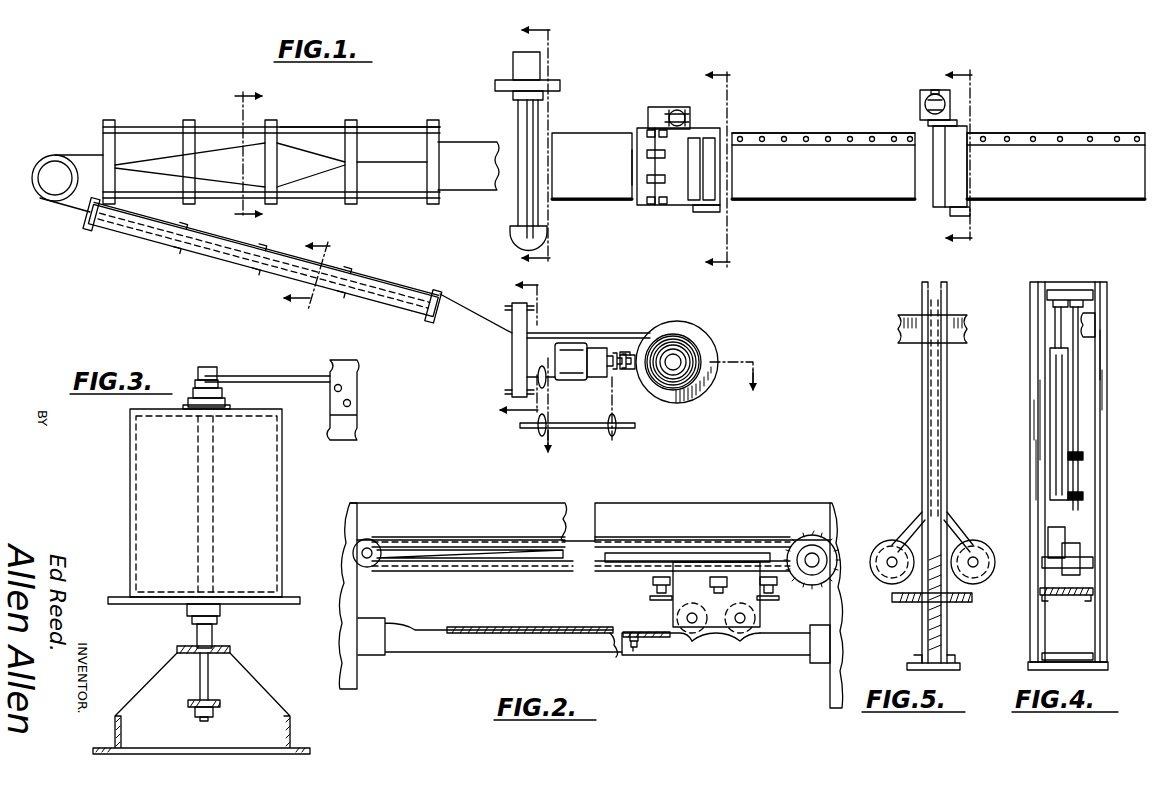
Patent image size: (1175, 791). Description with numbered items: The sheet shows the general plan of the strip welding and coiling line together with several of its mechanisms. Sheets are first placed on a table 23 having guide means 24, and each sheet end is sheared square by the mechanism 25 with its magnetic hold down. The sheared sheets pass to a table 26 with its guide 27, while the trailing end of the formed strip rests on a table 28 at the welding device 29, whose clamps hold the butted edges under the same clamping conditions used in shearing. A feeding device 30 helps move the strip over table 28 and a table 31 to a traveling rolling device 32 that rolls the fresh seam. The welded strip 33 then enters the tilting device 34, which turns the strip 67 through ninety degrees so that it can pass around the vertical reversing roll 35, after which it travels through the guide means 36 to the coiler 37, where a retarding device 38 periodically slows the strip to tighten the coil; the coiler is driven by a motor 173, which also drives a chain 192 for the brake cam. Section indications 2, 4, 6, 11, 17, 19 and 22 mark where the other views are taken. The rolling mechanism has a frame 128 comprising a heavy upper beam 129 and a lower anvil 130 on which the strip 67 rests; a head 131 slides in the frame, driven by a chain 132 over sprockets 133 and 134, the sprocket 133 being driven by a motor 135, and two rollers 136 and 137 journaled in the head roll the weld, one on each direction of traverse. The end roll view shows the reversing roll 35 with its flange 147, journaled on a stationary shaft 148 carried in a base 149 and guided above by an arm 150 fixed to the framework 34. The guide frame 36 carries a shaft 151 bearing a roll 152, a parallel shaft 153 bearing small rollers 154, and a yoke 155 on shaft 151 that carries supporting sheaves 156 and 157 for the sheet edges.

In FIG. 1, the section line 2- 2 is at (528, 144).
In FIG. 1, the section line 4- 4 is at (296, 272).
In FIG. 1, the section line 6- 6 is at (709, 167).
In FIG. 1, the section line 11- 11 is at (945, 157).
In FIG. 1, the section line 17- 17 is at (262, 155).
In FIG. 1, the view arrow 19 is at (651, 416).
In FIG. 1, the section line 22- 22 is at (498, 348).
In FIG. 1, the table 23 is at (1074, 144).
In FIG. 1, the guide means 24 is at (1029, 140).
In FIG. 1, the shearing mechanism 25 is at (946, 190).
In FIG. 1, the table 26 is at (823, 166).
In FIG. 1, the guide 27 is at (784, 136).
In FIG. 1, the table 28 is at (680, 202).
In FIG. 1, the welding device 29 is at (694, 139).
In FIG. 1, the feeding device 30 is at (645, 161).
In FIG. 1, the table 31 is at (585, 134).
In FIG. 1, the traveling rolling device 32 is at (522, 138).
In FIG. 1, the strip of welded sheets 33 is at (271, 162).
In FIG. 1, the tilting device 34 is at (370, 126).
In FIG. 3, the tilting device 34 is at (352, 372).
In FIG. 1, the vertical reversing roll 35 is at (56, 172).
In FIG. 3, the vertical reversing roll 35 is at (260, 480).
In FIG. 1, the guide means 36 is at (179, 246).
In FIG. 5, the guide means 36 is at (945, 450).
In FIG. 1, the coiler 37 is at (700, 336).
In FIG. 1, the retarding device 38 is at (512, 348).
In FIG. 1, the strip material 67 is at (440, 178).
In FIG. 2, the strip material 67 is at (547, 628).
In FIG. 1, the frame 128 is at (672, 110).
In FIG. 2, the frame 128 is at (834, 680).
In FIG. 2, the upper beam 129 is at (658, 522).
In FIG. 2, the anvil 130 is at (691, 650).
In FIG. 2, the head 131 is at (750, 560).
In FIG. 2, the chain 132 is at (514, 573).
In FIG. 2, the sprocket 133 is at (810, 556).
In FIG. 2, the sprocket 134 is at (368, 544).
In FIG. 1, the motor 135 is at (520, 66).
In FIG. 2, the roller 136 is at (744, 634).
In FIG. 2, the roller 137 is at (680, 634).
In FIG. 3, the flange 147 is at (300, 604).
In FIG. 3, the shaft 148 is at (212, 632).
In FIG. 3, the base 149 is at (242, 688).
In FIG. 3, the arm 150 is at (248, 376).
In FIG. 4, the shaft 151 is at (1062, 318).
In FIG. 4, the roll 152 is at (1060, 397).
In FIG. 4, the parallel shaft 153 is at (1078, 370).
In FIG. 4, the small rollers 154 is at (1083, 496).
In FIG. 5, the yoke 155 is at (954, 532).
In FIG. 5, the supporting sheave 156 is at (975, 585).
In FIG. 4, the supporting sheave 156 is at (1059, 588).
In FIG. 5, the supporting sheave 157 is at (886, 584).
In FIG. 1, the motor 173 is at (572, 346).
In FIG. 1, the chain 192 is at (547, 407).